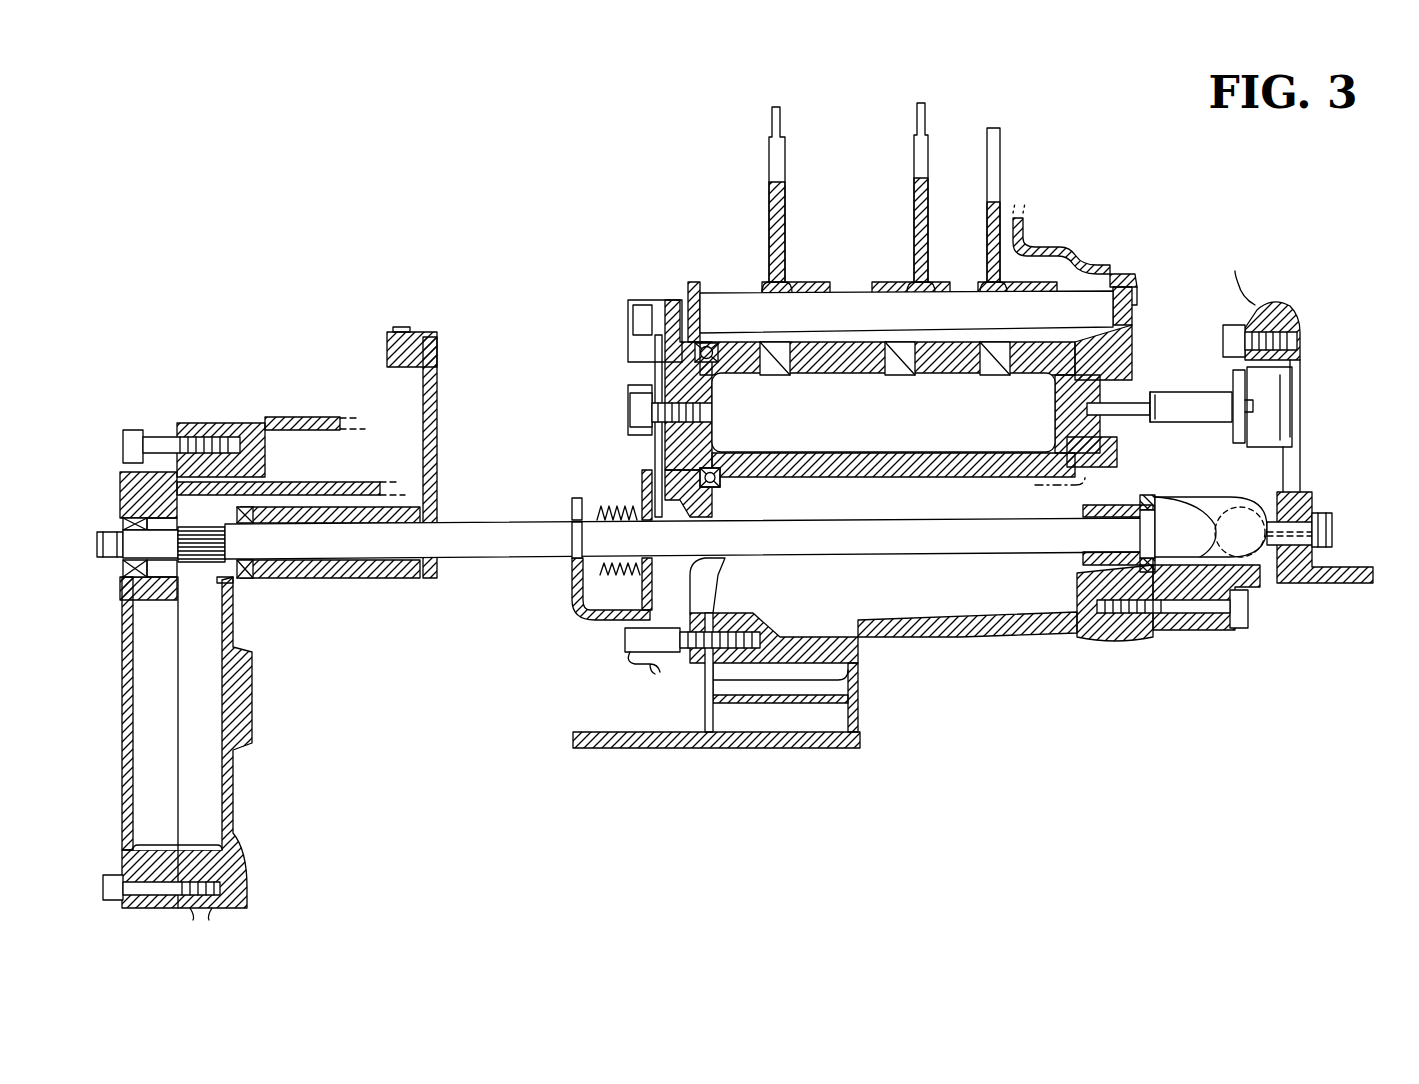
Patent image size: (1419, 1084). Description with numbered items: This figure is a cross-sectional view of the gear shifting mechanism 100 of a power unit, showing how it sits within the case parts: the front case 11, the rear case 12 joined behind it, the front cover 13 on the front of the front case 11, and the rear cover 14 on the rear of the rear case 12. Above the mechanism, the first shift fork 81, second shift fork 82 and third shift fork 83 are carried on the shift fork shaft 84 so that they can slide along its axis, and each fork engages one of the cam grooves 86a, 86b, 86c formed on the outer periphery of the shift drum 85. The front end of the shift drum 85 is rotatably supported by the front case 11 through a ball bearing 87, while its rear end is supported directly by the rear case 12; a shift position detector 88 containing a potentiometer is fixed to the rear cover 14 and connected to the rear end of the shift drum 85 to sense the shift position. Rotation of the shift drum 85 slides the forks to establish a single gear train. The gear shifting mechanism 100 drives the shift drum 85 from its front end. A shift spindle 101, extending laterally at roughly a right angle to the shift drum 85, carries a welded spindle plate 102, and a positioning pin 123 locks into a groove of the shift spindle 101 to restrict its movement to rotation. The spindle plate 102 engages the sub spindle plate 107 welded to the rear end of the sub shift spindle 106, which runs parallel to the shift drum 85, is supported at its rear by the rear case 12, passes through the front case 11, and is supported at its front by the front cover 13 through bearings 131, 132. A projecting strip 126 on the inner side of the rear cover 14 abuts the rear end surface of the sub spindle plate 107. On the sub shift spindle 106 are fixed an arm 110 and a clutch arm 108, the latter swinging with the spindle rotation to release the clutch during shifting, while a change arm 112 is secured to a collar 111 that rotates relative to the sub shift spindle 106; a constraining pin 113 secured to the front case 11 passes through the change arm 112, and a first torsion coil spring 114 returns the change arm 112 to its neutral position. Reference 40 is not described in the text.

The front case 11 is at (708, 748).
The rear case 12 is at (1115, 628).
The front cover 13 is at (235, 797).
The rear cover 14 is at (1290, 312).
The electric motor 40 is at (1046, 163).
The first shift fork 81 is at (914, 198).
The second shift fork 82 is at (769, 200).
The third shift fork 83 is at (987, 218).
The shift fork shaft 84 is at (851, 302).
The shift drum 85 is at (1112, 390).
The cam groove 86a is at (898, 365).
The cam groove 86b is at (775, 365).
The cam groove 86c is at (993, 365).
The ball bearing 87 is at (722, 482).
The shift position detector 88 is at (1280, 408).
The gear shifting mechanism 100 is at (551, 389).
The shift spindle 101 is at (1258, 588).
The spindle plate 102 is at (1213, 505).
The sub shift spindle 106 is at (505, 560).
The sub spindle plate 107 is at (1148, 495).
The clutch arm 108 is at (440, 410).
The arm 110 is at (572, 595).
The collar 111 is at (576, 497).
The change arm 112 is at (640, 495).
The constraining pin 113 is at (660, 655).
The first torsion coil spring 114 is at (612, 630).
The positioning pin 123 is at (1335, 530).
The projecting strip 126 is at (1172, 502).
The bearing 131 is at (120, 578).
The bearing 132 is at (262, 578).